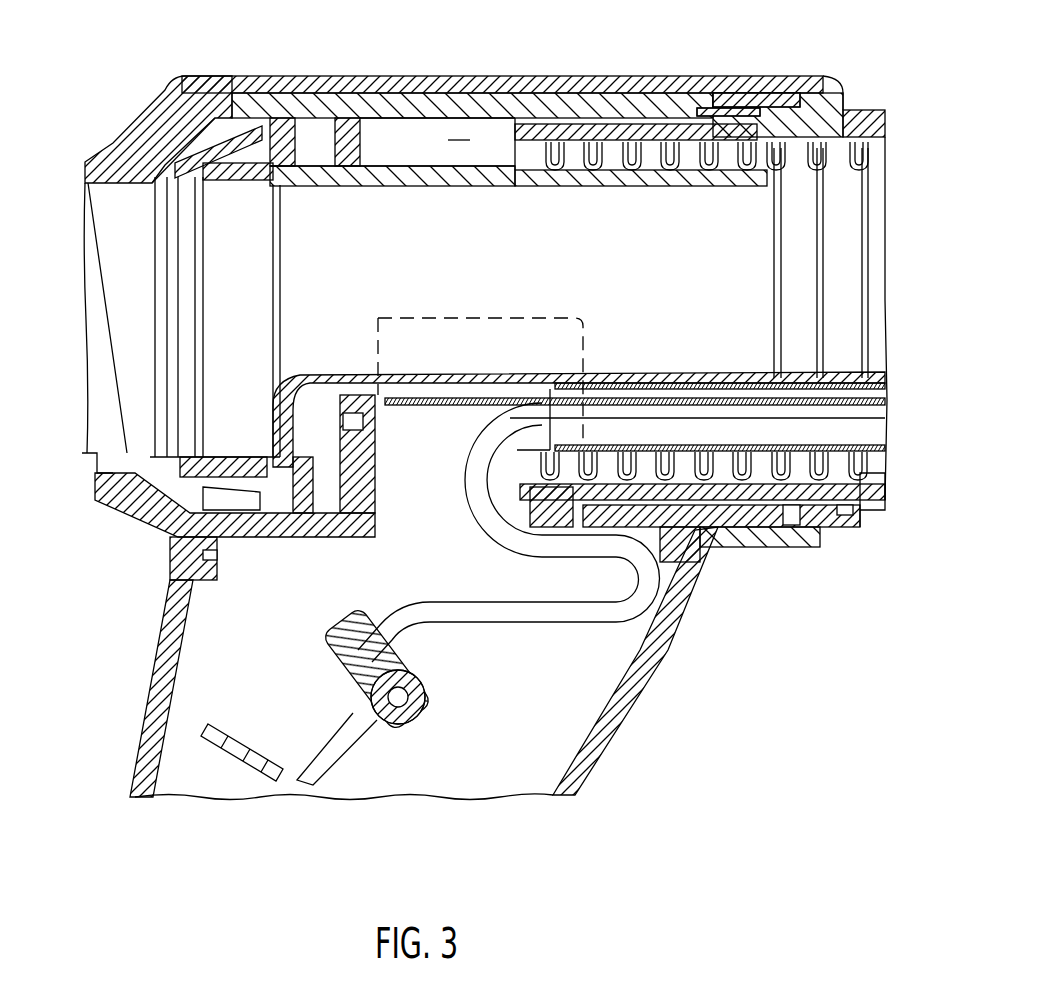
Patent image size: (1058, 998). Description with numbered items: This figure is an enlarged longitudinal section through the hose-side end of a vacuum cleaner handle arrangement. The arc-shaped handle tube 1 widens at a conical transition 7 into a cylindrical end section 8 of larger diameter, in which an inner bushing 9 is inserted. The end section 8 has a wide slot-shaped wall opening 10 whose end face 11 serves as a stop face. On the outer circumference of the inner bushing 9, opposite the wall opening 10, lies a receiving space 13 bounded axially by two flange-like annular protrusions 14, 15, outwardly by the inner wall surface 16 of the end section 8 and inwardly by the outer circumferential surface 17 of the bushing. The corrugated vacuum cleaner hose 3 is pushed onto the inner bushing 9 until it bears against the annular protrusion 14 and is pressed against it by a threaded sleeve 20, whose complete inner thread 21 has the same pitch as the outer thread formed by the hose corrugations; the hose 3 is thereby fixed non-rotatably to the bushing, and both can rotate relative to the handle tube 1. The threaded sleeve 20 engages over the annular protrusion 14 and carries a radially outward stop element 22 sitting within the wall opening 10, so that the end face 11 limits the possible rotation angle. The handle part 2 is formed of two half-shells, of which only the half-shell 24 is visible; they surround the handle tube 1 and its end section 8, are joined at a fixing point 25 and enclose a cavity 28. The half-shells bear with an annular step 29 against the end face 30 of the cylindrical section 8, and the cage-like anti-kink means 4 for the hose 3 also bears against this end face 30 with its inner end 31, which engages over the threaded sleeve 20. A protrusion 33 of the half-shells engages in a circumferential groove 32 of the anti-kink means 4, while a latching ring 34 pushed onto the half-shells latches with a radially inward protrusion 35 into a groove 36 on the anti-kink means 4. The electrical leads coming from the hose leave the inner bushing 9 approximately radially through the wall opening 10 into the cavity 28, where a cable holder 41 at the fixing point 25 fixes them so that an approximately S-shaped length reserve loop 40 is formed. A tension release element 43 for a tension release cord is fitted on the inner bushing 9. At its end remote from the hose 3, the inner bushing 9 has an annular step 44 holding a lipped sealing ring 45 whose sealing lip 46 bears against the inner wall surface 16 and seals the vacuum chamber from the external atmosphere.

The handle tube 1 is at (98, 166).
The handle part 2 is at (642, 698).
The vacuum cleaner hose 3 is at (842, 247).
The anti-kink means 4 is at (867, 108).
The conical transition 7 is at (146, 120).
The cylindrical end section 8 is at (420, 108).
The inner bushing 9 is at (398, 195).
The wall opening 10 is at (353, 500).
The end face 11 is at (425, 322).
The receiving space 13 is at (460, 140).
The annular protrusion 14 is at (532, 148).
The annular protrusion 15 is at (333, 160).
The inner wall surface 16 is at (382, 130).
The outer circumferential surface 17 is at (444, 168).
The threaded sleeve 20 is at (622, 124).
The inner thread 21 is at (637, 530).
The stop element 22 is at (537, 528).
The half-shell 24 is at (342, 93).
The fixing point 25 is at (396, 700).
The cavity 28 is at (494, 773).
The annular step 29 is at (702, 93).
The end face 30 is at (677, 522).
The inner end 31 is at (767, 80).
The circumferential groove 32 is at (784, 502).
The protrusion 33 is at (792, 505).
The latching ring 34 is at (725, 88).
The protrusion 35 is at (839, 525).
The groove 36 is at (857, 513).
The length reserve loop 40 is at (557, 632).
The cable holder 41 is at (358, 662).
The tension release element 43 is at (330, 482).
The annular step 44 is at (233, 185).
The lipped sealing ring 45 is at (195, 172).
The sealing lip 46 is at (243, 135).